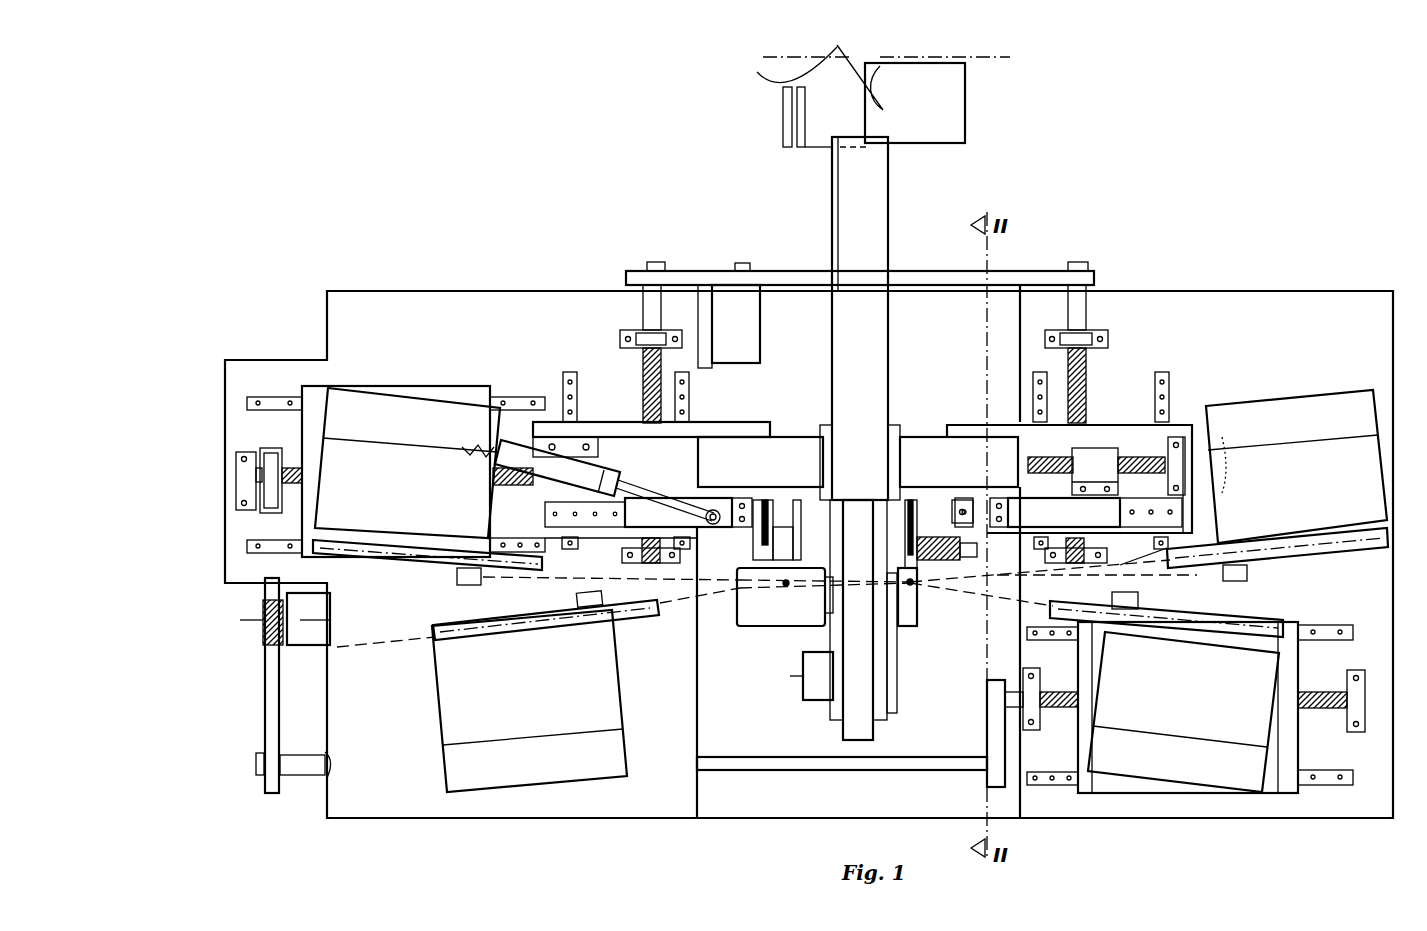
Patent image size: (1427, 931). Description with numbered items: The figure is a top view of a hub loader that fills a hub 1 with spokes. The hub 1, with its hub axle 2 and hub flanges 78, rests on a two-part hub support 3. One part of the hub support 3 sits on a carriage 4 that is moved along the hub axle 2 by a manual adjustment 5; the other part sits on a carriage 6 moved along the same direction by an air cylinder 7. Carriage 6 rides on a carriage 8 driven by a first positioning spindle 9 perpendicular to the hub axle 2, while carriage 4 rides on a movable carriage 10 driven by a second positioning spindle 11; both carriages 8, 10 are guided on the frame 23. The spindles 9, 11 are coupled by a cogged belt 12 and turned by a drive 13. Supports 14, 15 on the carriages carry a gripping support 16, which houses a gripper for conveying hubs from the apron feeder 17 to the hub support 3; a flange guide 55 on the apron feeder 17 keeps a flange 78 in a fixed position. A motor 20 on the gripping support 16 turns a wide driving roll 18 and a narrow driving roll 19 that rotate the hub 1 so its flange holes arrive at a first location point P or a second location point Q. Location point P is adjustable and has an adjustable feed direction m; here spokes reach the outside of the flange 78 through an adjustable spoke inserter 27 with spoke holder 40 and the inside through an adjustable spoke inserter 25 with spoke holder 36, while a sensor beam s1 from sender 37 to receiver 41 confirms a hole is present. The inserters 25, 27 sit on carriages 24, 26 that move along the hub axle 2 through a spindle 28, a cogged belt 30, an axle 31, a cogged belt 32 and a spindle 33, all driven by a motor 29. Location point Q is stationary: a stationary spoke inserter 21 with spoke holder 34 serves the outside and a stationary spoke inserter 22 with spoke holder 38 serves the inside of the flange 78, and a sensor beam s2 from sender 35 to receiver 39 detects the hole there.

The hub 1 is at (823, 545).
The hub axle 2 is at (887, 530).
The hub support 3 is at (728, 498).
The carriage 4 is at (1068, 512).
The manual adjustment 5 is at (1045, 455).
The carriage 6 is at (648, 513).
The air cylinder 7 is at (591, 482).
The carriage 8 is at (610, 440).
The first positioning spindle 9 is at (642, 376).
The movable carriage 10 is at (1100, 435).
The second positioning spindle 11 is at (1086, 378).
The cogged belt 12 is at (930, 270).
The drive 13 is at (760, 345).
The support 14 is at (785, 440).
The support 15 is at (922, 440).
The gripping support 16 is at (888, 347).
The apron feeder 17 is at (948, 128).
The wide driving roll 18 is at (752, 628).
The narrow driving roll 19 is at (908, 600).
The motor 20 is at (818, 700).
The stationary spoke inserter 21 is at (1302, 403).
The stationary spoke inserter 22 is at (510, 772).
The frame 23 is at (666, 790).
The carriage 24 is at (1285, 768).
The adjustable spoke inserter 25 is at (1128, 768).
The carriage 26 is at (313, 405).
The adjustable spoke inserter 27 is at (410, 407).
The spindle 28 is at (297, 462).
The motor 29 is at (302, 645).
The cogged belt 30 is at (266, 690).
The axle 31 is at (300, 775).
The cogged belt 32 is at (990, 728).
The spindle 33 is at (1327, 692).
The spoke holder 34 is at (1312, 550).
The sender 35 is at (1248, 580).
The spoke holder 36 is at (1222, 623).
The sender 37 is at (1124, 608).
The spoke holder 38 is at (432, 632).
The receiver 39 is at (604, 626).
The spoke holder 40 is at (376, 565).
The receiver 41 is at (460, 580).
The flange guide 55 is at (780, 127).
The hub flange 78 is at (768, 503).
The feed direction m is at (585, 565).
The first location point P is at (786, 587).
The second location point Q is at (915, 586).
The sensor beam s1 is at (623, 612).
The sensor beam s2 is at (1150, 575).